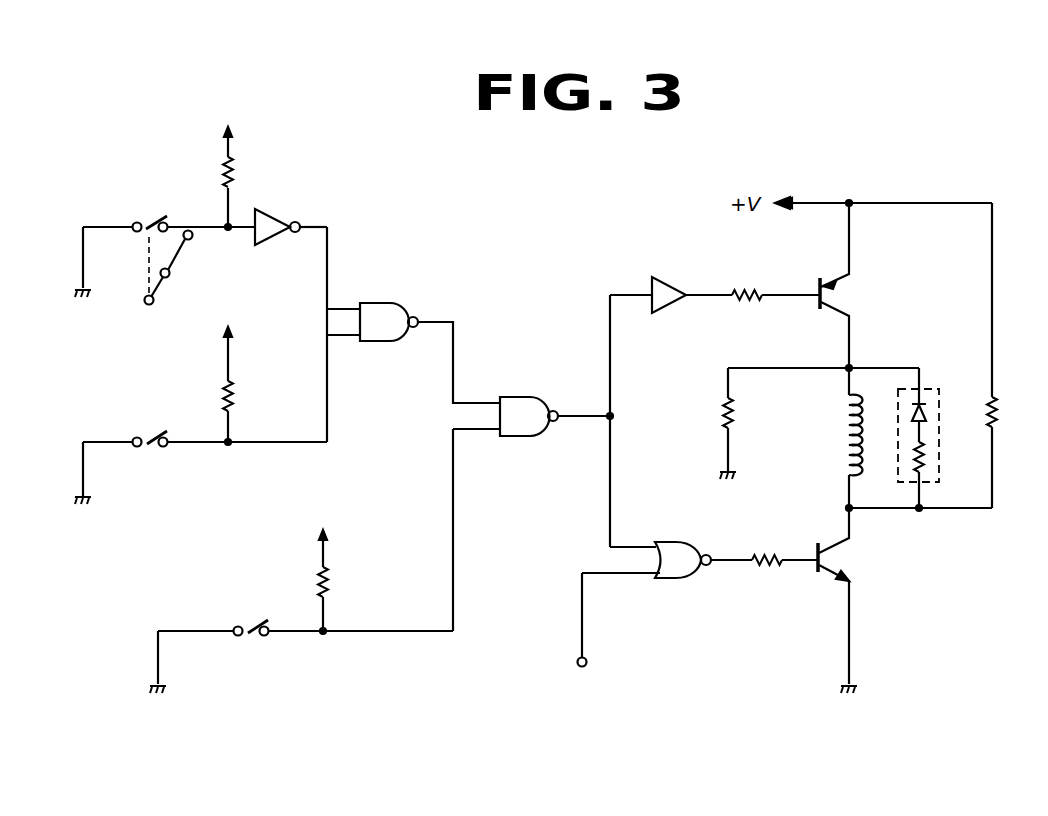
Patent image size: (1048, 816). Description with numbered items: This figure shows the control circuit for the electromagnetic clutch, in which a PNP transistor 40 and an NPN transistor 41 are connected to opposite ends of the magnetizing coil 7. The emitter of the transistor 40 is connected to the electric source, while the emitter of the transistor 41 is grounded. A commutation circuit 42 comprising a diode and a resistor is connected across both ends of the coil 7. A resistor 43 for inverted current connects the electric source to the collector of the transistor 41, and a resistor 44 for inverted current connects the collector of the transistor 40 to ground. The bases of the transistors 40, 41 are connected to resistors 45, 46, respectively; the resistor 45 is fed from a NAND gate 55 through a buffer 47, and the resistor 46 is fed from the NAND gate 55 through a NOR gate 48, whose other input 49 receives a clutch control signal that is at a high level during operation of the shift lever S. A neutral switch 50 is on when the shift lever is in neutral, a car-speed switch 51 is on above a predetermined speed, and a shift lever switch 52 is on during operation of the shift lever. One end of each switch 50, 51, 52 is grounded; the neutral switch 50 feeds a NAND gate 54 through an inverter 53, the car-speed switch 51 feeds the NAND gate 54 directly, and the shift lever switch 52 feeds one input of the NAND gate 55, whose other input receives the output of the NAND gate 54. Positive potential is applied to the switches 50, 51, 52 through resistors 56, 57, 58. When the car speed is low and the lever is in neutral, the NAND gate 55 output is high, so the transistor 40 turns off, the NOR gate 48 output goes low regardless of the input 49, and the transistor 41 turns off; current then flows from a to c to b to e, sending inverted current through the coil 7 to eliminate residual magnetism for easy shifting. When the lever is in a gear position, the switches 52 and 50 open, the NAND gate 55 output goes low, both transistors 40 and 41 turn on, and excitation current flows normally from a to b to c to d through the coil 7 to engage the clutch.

The magnetizing coil 7 is at (842, 458).
The transistor 40 is at (843, 296).
The transistor 41 is at (836, 562).
The commutation circuit 42 is at (952, 386).
The resistor for inverted current 43 is at (996, 416).
The resistor for inverted current 44 is at (720, 412).
The resistor 45 is at (760, 279).
The resistor 46 is at (756, 566).
The buffer 47 is at (684, 270).
The NOR gate 48 is at (680, 580).
The input 49 is at (578, 666).
The neutral switch 50 is at (152, 216).
The car-speed switch 51 is at (153, 425).
The shift lever switch 52 is at (247, 622).
The inverter 53 is at (278, 214).
The NAND gate 54 is at (398, 294).
The NAND gate 55 is at (535, 388).
The resistor 56 is at (224, 178).
The resistor 57 is at (232, 402).
The resistor 58 is at (328, 590).
The shift lever S is at (176, 258).
The circuit point a is at (868, 200).
The circuit point b is at (852, 368).
The circuit point c is at (852, 511).
The circuit point d is at (855, 682).
The circuit point e is at (732, 470).